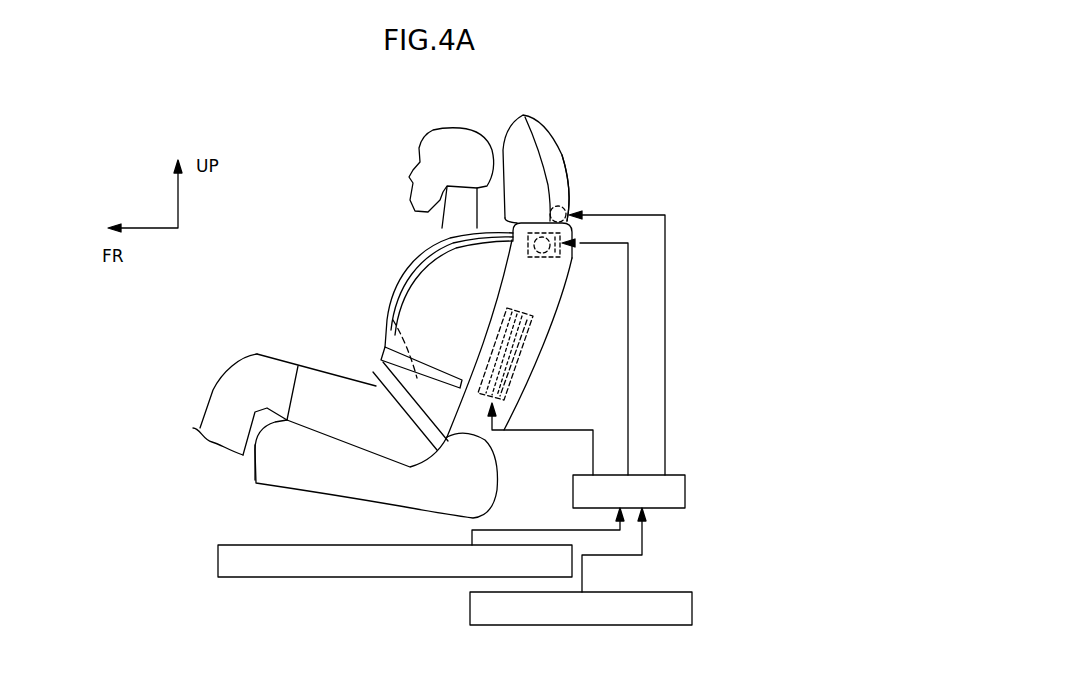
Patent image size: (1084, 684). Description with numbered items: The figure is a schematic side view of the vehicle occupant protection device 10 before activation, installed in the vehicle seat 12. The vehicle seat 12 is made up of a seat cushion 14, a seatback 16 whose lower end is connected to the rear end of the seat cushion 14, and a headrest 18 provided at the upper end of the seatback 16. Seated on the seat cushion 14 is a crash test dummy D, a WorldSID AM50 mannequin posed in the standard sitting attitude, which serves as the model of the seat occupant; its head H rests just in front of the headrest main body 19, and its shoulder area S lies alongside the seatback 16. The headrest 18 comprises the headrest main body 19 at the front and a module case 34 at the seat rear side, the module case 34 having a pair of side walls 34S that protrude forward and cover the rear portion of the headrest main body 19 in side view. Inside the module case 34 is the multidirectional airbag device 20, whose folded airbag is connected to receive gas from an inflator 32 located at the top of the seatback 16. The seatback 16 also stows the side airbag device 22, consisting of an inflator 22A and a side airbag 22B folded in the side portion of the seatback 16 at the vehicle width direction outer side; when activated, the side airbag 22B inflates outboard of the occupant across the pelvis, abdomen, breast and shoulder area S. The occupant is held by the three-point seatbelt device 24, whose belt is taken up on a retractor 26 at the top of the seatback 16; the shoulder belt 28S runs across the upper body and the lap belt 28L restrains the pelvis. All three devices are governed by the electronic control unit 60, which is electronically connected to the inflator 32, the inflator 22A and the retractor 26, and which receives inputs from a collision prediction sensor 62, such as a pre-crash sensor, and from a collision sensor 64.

The vehicle occupant protection device 10 is at (350, 155).
The vehicle seat 12 is at (283, 496).
The seat cushion 14 is at (258, 472).
The seatback 16 is at (542, 305).
The headrest 18 is at (606, 100).
The headrest main body 19 is at (510, 124).
The multidirectional airbag device 20 is at (580, 160).
The side airbag device 22 is at (515, 356).
The inflator 22A is at (503, 383).
The side airbag 22B is at (493, 360).
The seatbelt device 24 is at (362, 358).
The retractor 26 is at (543, 257).
The shoulder belt 28S is at (432, 247).
The lap belt 28L is at (390, 393).
The inflator 32 is at (566, 208).
The module case 34 is at (548, 128).
The side walls 34S is at (553, 152).
The electronic control unit 60 is at (688, 490).
The collision prediction sensor 62 is at (218, 556).
The collision sensor 64 is at (694, 608).
The head H is at (462, 129).
The dummy D is at (400, 206).
The shoulder area S is at (497, 250).